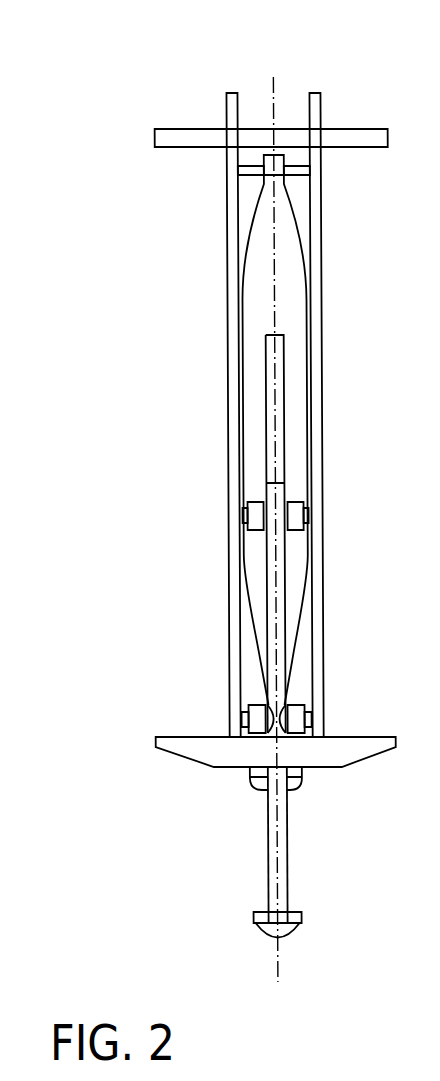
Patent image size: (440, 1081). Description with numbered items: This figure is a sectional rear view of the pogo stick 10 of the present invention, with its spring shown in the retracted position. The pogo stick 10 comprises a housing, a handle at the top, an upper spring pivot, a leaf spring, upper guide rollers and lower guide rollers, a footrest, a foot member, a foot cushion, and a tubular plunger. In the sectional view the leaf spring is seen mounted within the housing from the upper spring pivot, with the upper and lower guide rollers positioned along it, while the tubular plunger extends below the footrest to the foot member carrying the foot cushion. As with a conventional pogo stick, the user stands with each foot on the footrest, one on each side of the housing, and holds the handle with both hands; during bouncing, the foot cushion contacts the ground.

The pogo stick 10 is at (243, 499).